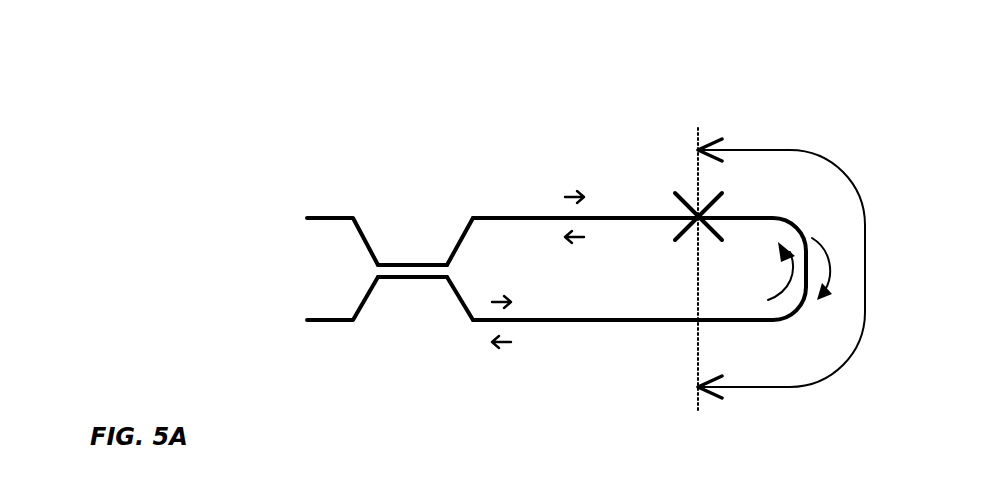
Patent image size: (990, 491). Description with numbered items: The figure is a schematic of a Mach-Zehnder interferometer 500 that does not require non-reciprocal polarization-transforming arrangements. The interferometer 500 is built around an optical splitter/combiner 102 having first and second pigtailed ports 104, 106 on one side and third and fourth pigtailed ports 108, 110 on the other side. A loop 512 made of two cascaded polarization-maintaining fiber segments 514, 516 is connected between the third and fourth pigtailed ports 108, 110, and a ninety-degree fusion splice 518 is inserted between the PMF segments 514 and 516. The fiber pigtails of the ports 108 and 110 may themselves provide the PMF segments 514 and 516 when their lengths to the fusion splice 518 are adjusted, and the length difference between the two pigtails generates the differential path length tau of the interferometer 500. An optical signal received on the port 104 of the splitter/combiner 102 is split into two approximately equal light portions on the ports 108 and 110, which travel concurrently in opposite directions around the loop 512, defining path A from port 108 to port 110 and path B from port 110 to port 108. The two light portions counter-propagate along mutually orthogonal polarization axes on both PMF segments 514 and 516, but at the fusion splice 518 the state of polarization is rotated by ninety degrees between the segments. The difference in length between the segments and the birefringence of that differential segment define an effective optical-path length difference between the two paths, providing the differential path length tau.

The Mach-Zehnder interferometer 500 is at (224, 113).
The optical splitter/combiner 102 is at (397, 265).
The first pigtailed port 104 is at (353, 216).
The second pigtailed port 106 is at (355, 322).
The third pigtailed port 108 is at (473, 216).
The fourth pigtailed port 110 is at (472, 322).
The loop 512 is at (870, 141).
The first PMF segment 514 is at (607, 216).
The second PMF segment 516 is at (602, 322).
The 90° fusion splice 518 is at (697, 220).